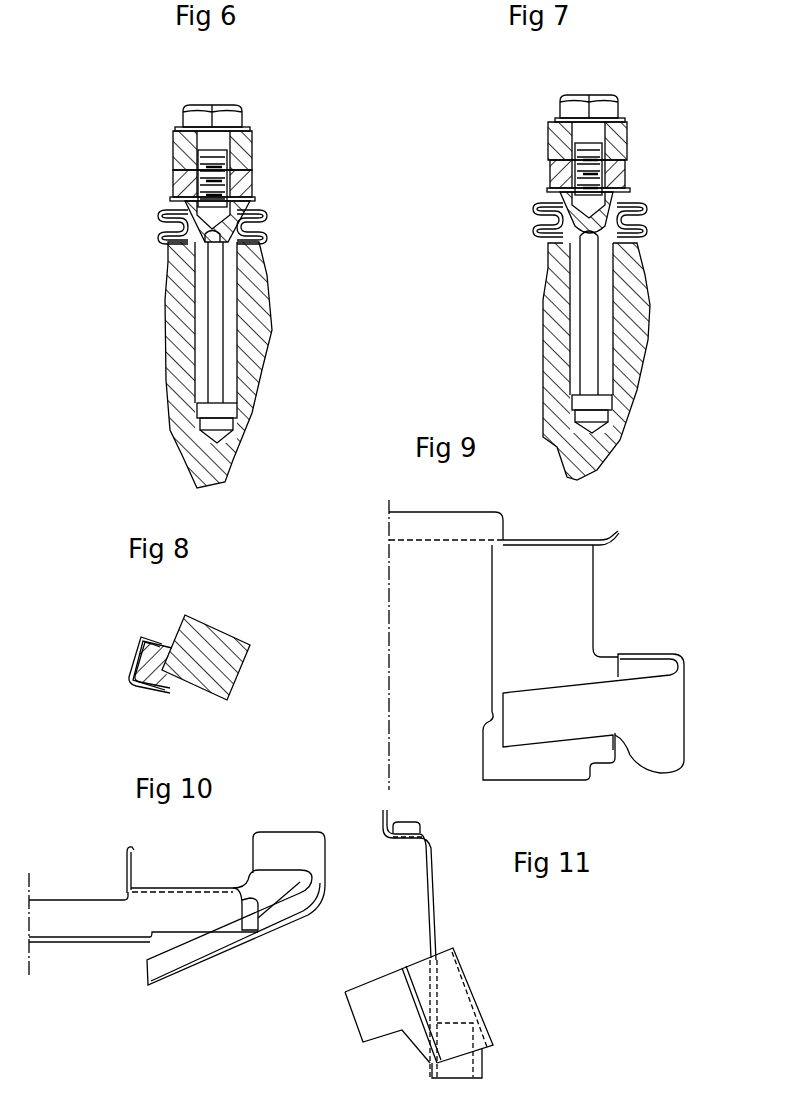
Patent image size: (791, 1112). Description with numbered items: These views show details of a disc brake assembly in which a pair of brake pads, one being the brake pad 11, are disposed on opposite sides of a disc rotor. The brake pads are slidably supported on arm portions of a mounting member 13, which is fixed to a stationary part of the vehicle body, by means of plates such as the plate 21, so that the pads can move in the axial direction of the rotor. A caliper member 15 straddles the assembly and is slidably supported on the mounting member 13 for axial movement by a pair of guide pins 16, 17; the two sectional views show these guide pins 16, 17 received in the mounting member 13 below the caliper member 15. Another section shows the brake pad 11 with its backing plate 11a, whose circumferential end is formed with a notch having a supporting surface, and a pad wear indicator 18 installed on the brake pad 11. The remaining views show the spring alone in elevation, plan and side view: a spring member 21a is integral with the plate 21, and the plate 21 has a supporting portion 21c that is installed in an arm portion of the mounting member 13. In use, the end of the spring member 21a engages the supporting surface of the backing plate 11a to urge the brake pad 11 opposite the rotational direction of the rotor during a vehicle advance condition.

In FIG. 8, the brake pad 11 is at (232, 662).
In FIG. 8, the backing plate 11a is at (205, 682).
In FIG. 6, the mounting member 13 is at (180, 354).
In FIG. 7, the mounting member 13 is at (548, 367).
In FIG. 6, the caliper member 15 is at (172, 149).
In FIG. 7, the caliper member 15 is at (550, 149).
In FIG. 7, the guide pin 16 is at (605, 270).
In FIG. 6, the guide pin 17 is at (230, 298).
In FIG. 8, the pad wear indicator 18 is at (128, 668).
In FIG. 9, the plate 21 is at (441, 535).
In FIG. 10, the plate 21 is at (79, 932).
In FIG. 11, the plate 21 is at (437, 903).
In FIG. 9, the spring member 21a is at (665, 702).
In FIG. 10, the spring member 21a is at (303, 862).
In FIG. 11, the spring member 21a is at (456, 992).
In FIG. 9, the supporting portion 21c is at (483, 760).
In FIG. 10, the supporting portion 21c is at (127, 878).
In FIG. 11, the supporting portion 21c is at (445, 1068).